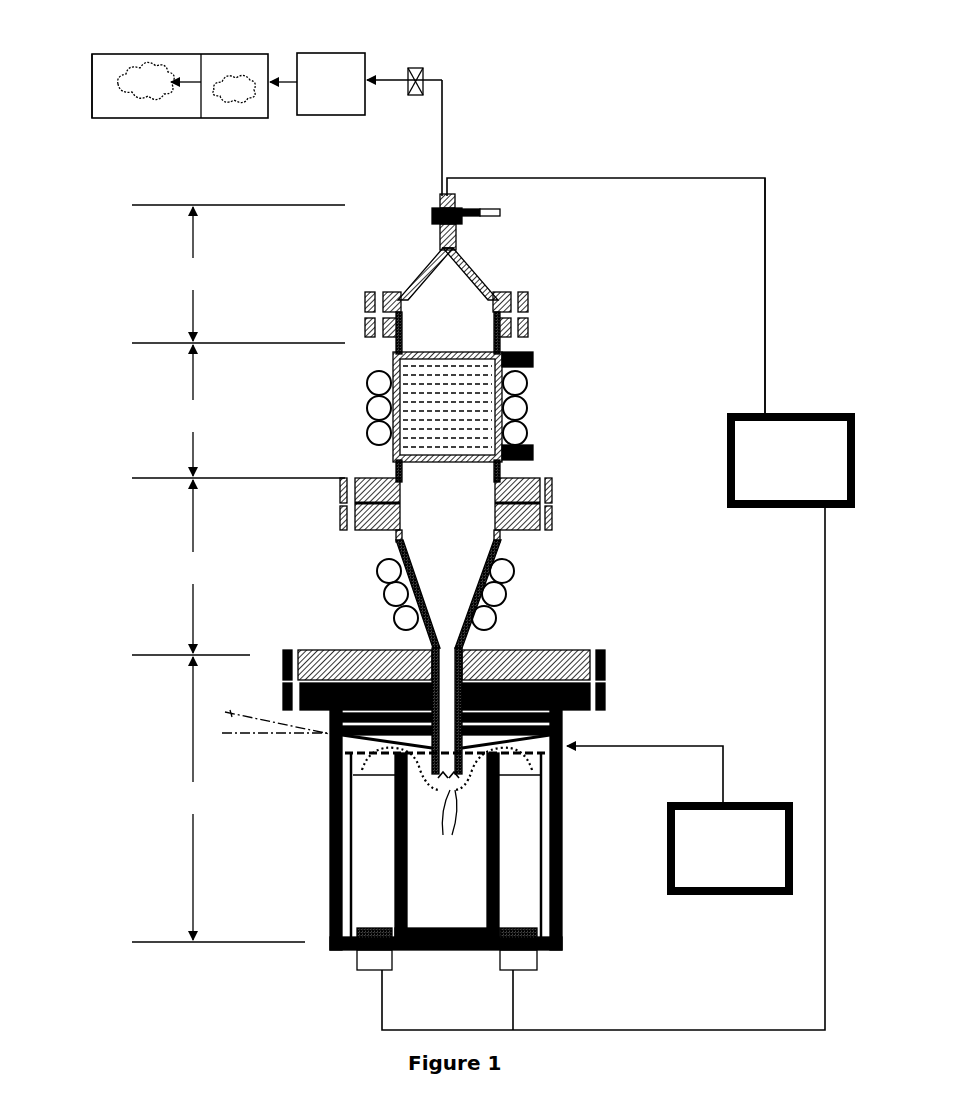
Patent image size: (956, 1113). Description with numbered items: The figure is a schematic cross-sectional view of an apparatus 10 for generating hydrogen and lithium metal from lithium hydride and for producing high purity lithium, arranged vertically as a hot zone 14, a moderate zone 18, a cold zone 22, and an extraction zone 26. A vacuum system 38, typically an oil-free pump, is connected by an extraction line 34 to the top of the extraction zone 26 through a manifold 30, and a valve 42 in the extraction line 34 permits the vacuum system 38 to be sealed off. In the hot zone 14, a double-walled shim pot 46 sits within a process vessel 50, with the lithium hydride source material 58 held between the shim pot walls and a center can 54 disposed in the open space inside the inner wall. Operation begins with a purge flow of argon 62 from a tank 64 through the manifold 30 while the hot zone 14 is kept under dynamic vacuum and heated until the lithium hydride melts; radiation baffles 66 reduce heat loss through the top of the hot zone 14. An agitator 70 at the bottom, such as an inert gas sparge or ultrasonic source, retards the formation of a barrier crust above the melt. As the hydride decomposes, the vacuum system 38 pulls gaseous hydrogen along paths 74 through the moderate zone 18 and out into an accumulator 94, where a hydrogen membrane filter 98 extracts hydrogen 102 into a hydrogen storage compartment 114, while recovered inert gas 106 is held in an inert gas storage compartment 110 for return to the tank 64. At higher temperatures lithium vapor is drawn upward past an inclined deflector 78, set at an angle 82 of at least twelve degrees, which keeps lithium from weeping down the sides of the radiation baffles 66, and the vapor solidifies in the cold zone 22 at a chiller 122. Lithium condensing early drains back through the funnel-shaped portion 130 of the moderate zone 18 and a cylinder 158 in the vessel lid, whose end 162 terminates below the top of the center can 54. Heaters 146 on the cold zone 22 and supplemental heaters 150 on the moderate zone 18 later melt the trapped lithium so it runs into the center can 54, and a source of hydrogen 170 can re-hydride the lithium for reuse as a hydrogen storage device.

The apparatus 10 is at (597, 60).
The hot zone 14 is at (190, 798).
The moderate zone 18 is at (190, 566).
The cold zone 22 is at (190, 410).
The extraction zone 26 is at (190, 274).
The manifold 30 is at (436, 208).
The extraction line 34 is at (450, 156).
The vacuum system 38 is at (335, 53).
The valve 42 is at (417, 68).
The shim pot 46 is at (545, 880).
The process vessel 50 is at (562, 915).
The center can 54 is at (405, 885).
The lithium hydride source material 58 is at (440, 845).
The argon 62 is at (791, 460).
The tank 64 is at (778, 413).
The radiation baffles 66 is at (550, 690).
The agitator 70 is at (372, 970).
The paths 74 is at (447, 798).
The inclined deflector 78 is at (388, 740).
The angle 82 is at (240, 716).
The accumulator 94 is at (166, 134).
The hydrogen membrane filter 98 is at (213, 70).
The hydrogen 102 is at (138, 68).
The recovered inert gas 106 is at (248, 130).
The inert gas storage compartment 110 is at (225, 118).
The hydrogen storage compartment 114 is at (95, 118).
The chiller 122 is at (485, 352).
The funnel-shaped portion 130 is at (415, 600).
The heaters 146 is at (367, 430).
The supplemental heaters 150 is at (377, 570).
The cylinder 158 is at (467, 690).
The end 162 is at (430, 767).
The source of hydrogen 170 is at (678, 818).